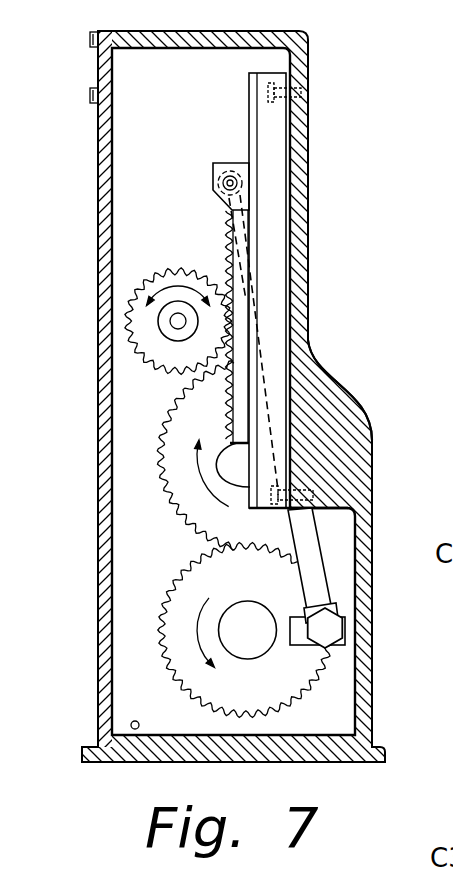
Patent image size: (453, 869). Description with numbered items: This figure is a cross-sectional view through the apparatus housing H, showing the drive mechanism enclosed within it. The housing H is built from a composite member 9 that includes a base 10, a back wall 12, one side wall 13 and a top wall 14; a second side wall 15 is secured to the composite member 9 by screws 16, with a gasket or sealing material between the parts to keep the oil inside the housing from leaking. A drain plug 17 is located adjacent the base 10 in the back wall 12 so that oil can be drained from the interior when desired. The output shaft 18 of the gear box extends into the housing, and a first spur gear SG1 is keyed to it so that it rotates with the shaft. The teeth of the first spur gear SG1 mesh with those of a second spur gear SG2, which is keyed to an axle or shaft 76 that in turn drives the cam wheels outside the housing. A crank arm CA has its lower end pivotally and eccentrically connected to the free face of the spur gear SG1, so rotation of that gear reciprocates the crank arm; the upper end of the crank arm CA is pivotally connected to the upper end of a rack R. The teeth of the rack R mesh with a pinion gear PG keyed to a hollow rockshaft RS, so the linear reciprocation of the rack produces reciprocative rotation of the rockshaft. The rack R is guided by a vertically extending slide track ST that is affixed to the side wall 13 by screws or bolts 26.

The back wall 12 is at (156, 62).
The top wall 14 is at (239, 35).
The screws 16 is at (91, 92).
The composite member 9 is at (188, 118).
The screws or bolts 26 is at (301, 84).
The slide track ST is at (276, 151).
The side wall 13 is at (300, 224).
The apparatus housing H is at (359, 394).
The base 10 is at (356, 746).
The second side wall 15 is at (98, 507).
The rack R is at (227, 268).
The axle or shaft 76 is at (228, 457).
The pinion gear PG is at (155, 278).
The hollow rockshaft RS is at (173, 333).
The second spur gear SG2 is at (203, 507).
The first spur gear SG1 is at (263, 698).
The output shaft 18 is at (259, 643).
The crank arm CA is at (307, 571).
The drain plug 17 is at (135, 720).